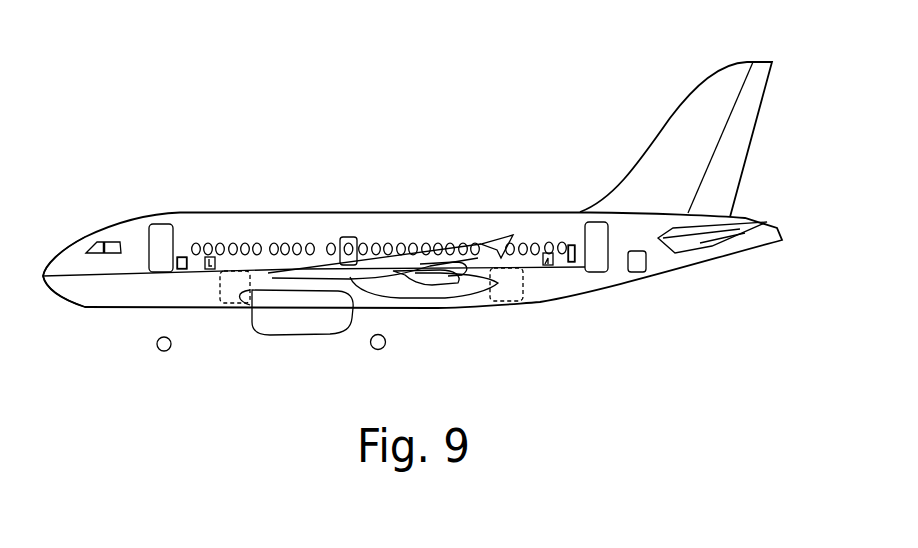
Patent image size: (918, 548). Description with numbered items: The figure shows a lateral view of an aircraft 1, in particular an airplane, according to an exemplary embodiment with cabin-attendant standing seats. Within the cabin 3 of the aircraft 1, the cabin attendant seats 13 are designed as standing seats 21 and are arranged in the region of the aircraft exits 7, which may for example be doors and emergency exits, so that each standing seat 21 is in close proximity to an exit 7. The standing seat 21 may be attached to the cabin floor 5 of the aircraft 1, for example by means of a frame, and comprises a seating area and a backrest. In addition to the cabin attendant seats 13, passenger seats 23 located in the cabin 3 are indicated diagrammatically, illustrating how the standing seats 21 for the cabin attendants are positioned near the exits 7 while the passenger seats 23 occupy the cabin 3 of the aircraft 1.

The aircraft 1 is at (192, 104).
The cabin 3 is at (311, 228).
The cabin floor 5 is at (93, 301).
The aircraft exit 7 is at (162, 226).
The cabin attendant seat 13 is at (182, 257).
The standing seat 21 is at (182, 270).
The passenger seat 23 is at (210, 270).